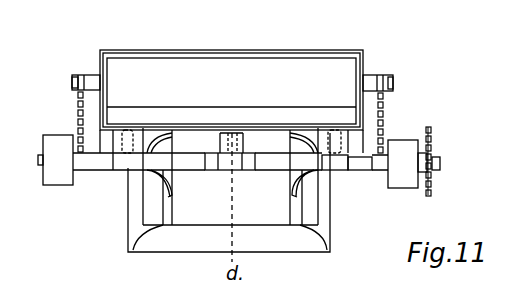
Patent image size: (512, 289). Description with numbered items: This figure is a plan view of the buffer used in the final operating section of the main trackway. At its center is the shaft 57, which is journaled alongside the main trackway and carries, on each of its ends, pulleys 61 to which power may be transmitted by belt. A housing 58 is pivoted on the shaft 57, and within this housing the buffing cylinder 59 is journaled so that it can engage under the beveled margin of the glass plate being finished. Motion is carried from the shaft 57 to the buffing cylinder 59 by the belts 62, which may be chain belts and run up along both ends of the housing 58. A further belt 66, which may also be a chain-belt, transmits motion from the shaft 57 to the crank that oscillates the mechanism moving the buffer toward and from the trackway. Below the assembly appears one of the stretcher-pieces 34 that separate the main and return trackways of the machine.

The housing 58 is at (365, 50).
The buffing cylinder 59 is at (233, 68).
The pulleys 61 is at (53, 180).
The belts 62 is at (390, 140).
The belt 66 is at (437, 145).
The shaft 57 is at (267, 170).
The stretcher-pieces 34 is at (215, 238).